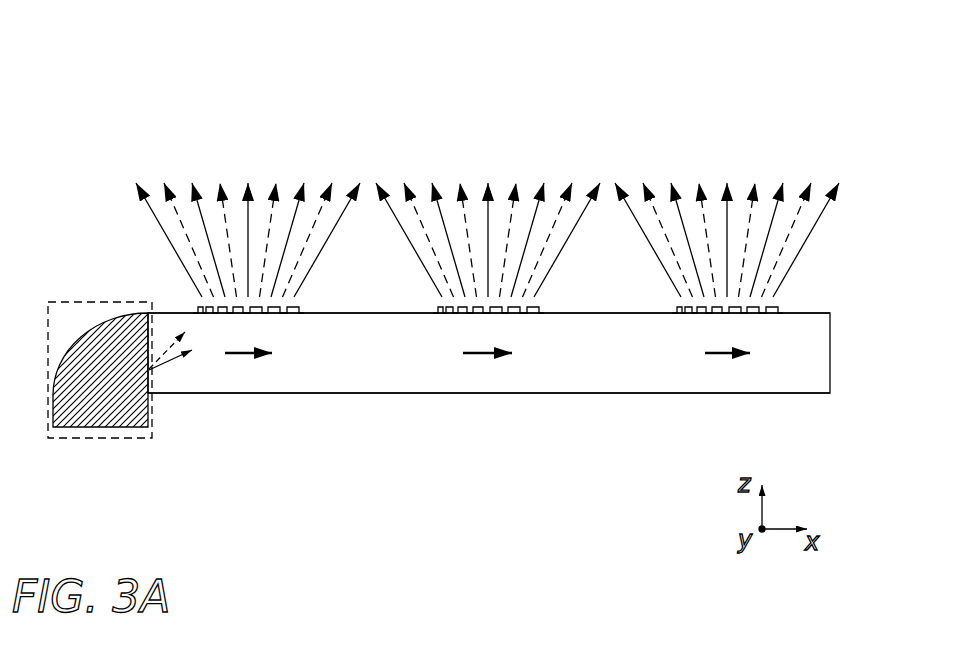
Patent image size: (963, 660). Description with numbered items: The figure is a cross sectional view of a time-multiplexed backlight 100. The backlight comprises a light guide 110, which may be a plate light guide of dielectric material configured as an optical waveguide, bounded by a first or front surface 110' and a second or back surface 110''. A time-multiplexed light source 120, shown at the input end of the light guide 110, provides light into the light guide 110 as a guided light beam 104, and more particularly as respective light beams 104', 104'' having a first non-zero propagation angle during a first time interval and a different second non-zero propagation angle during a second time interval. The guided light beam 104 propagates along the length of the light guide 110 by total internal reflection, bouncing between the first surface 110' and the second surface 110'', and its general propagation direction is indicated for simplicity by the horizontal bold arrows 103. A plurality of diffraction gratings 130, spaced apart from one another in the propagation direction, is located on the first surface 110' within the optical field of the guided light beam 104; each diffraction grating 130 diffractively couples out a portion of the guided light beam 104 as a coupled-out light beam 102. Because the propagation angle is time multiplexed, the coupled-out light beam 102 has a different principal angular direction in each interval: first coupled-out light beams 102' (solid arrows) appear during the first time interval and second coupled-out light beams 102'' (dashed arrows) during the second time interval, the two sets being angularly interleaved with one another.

The time-multiplexed backlight 100 is at (795, 62).
The coupled-out light beam 102 is at (526, 213).
The first coupled-out light beam 102' is at (487, 213).
The second coupled-out light beam 102'' is at (475, 213).
The horizontal bold arrows 103 is at (488, 372).
The guided light beam 104 is at (255, 413).
The first guided light beam 104' is at (255, 397).
The second guided light beam 104'' is at (167, 350).
The light guide 110 is at (538, 353).
The first surface 110' is at (525, 294).
The second surface 110'' is at (527, 413).
The time-multiplexed light source 120 is at (105, 445).
The diffraction grating 130 is at (178, 283).